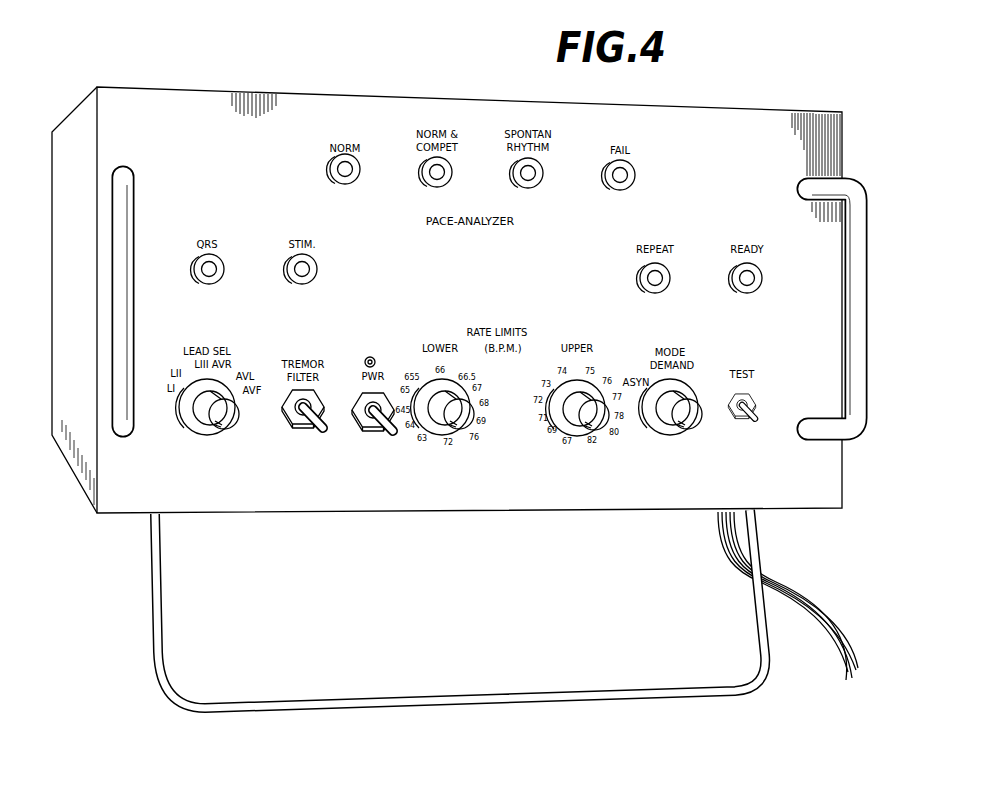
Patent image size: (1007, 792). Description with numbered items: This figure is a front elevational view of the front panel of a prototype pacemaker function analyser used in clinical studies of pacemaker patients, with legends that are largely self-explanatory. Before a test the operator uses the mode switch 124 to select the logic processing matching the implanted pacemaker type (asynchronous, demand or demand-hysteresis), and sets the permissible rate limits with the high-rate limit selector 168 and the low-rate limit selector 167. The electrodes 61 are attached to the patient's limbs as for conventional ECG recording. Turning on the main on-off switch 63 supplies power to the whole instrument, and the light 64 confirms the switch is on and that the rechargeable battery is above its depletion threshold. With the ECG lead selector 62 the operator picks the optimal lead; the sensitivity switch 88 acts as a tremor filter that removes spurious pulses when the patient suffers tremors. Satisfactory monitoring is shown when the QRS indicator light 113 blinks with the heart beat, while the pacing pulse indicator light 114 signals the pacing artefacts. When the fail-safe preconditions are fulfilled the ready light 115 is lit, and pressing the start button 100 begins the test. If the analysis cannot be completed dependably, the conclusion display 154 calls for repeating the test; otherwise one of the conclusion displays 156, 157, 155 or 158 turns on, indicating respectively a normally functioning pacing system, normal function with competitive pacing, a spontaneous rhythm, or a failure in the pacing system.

The electrodes 61 is at (810, 590).
The ECG lead selector 62 is at (200, 426).
The main on-off switch 63 is at (370, 428).
The light 64 is at (384, 339).
The sensitivity switch 88 is at (299, 425).
The start button 100 is at (758, 405).
The QRS indicator light 113 is at (197, 257).
The pacing pulse indicator light 114 is at (318, 267).
The ready light 115 is at (762, 279).
The switch 124 is at (677, 430).
The conclusion display 154 is at (641, 267).
The conclusion display 155 is at (516, 184).
The conclusion display 156 is at (328, 170).
The conclusion display 157 is at (427, 183).
The conclusion display 158 is at (638, 175).
The low-rate limit selector 167 is at (450, 434).
The high-rate limit selector 168 is at (580, 434).